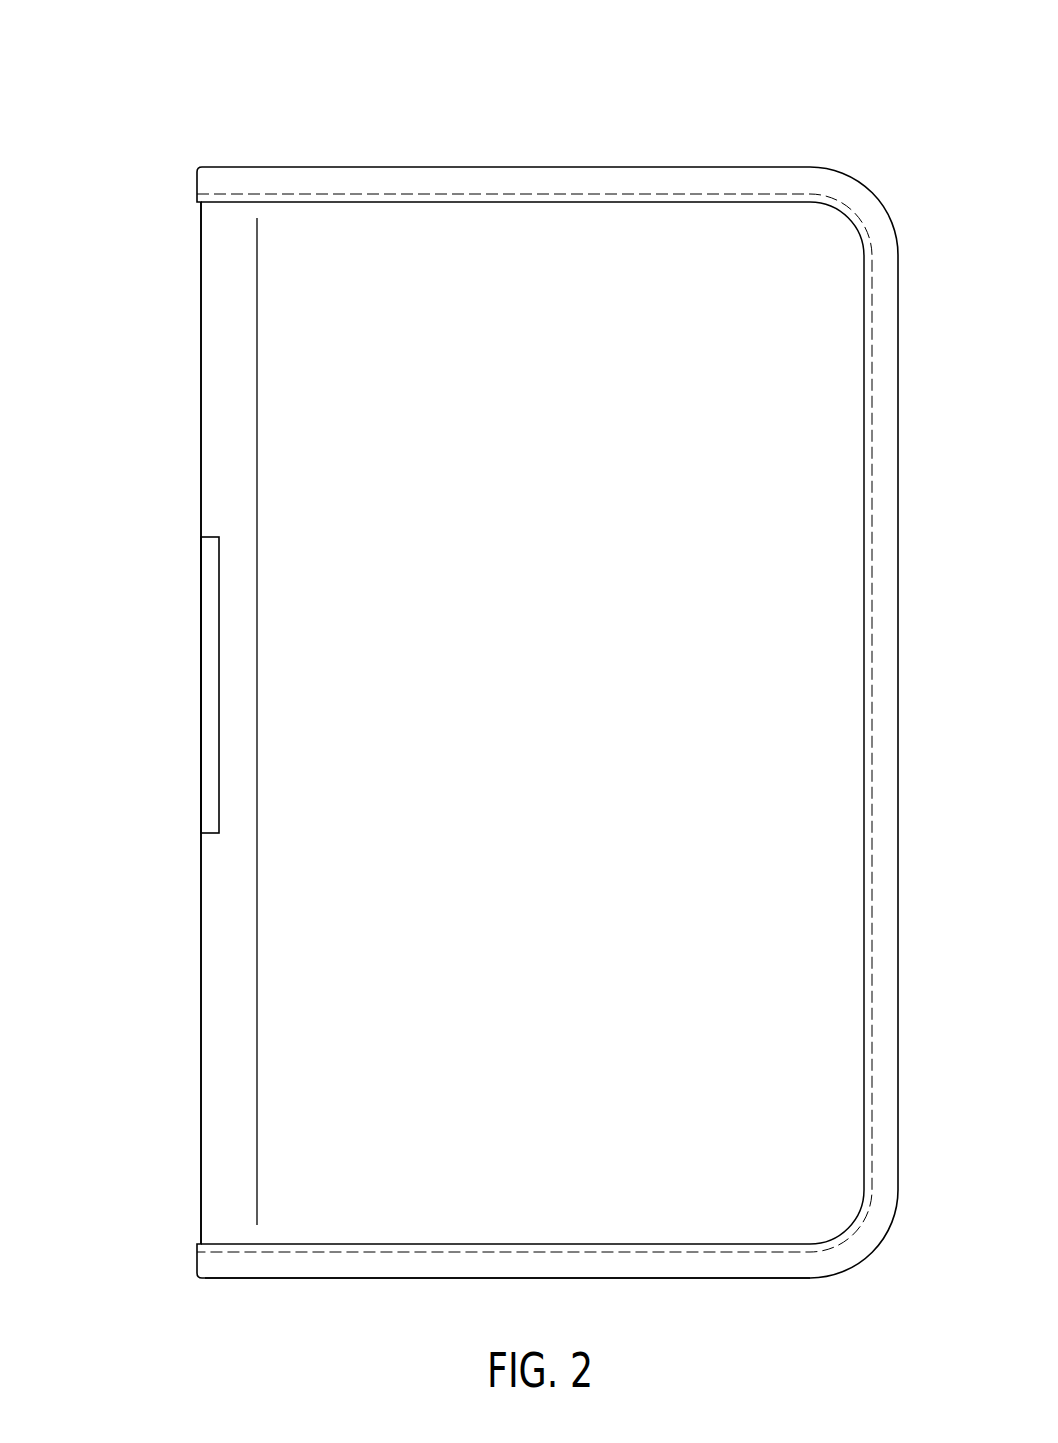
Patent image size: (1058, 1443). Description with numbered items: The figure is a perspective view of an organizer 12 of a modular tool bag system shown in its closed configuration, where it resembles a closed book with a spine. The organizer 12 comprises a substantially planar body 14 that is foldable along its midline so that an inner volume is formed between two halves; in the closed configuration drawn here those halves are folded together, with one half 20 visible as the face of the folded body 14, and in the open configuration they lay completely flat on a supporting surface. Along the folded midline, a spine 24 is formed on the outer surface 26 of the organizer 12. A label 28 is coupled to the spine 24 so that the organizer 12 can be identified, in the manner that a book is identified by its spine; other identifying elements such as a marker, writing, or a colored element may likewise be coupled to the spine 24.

The organizer 12 is at (647, 86).
The substantially planar body 14 is at (610, 253).
The outer surface 26 is at (657, 442).
The spine 24 is at (199, 378).
The label 28 is at (212, 672).
The half 20 is at (548, 1213).